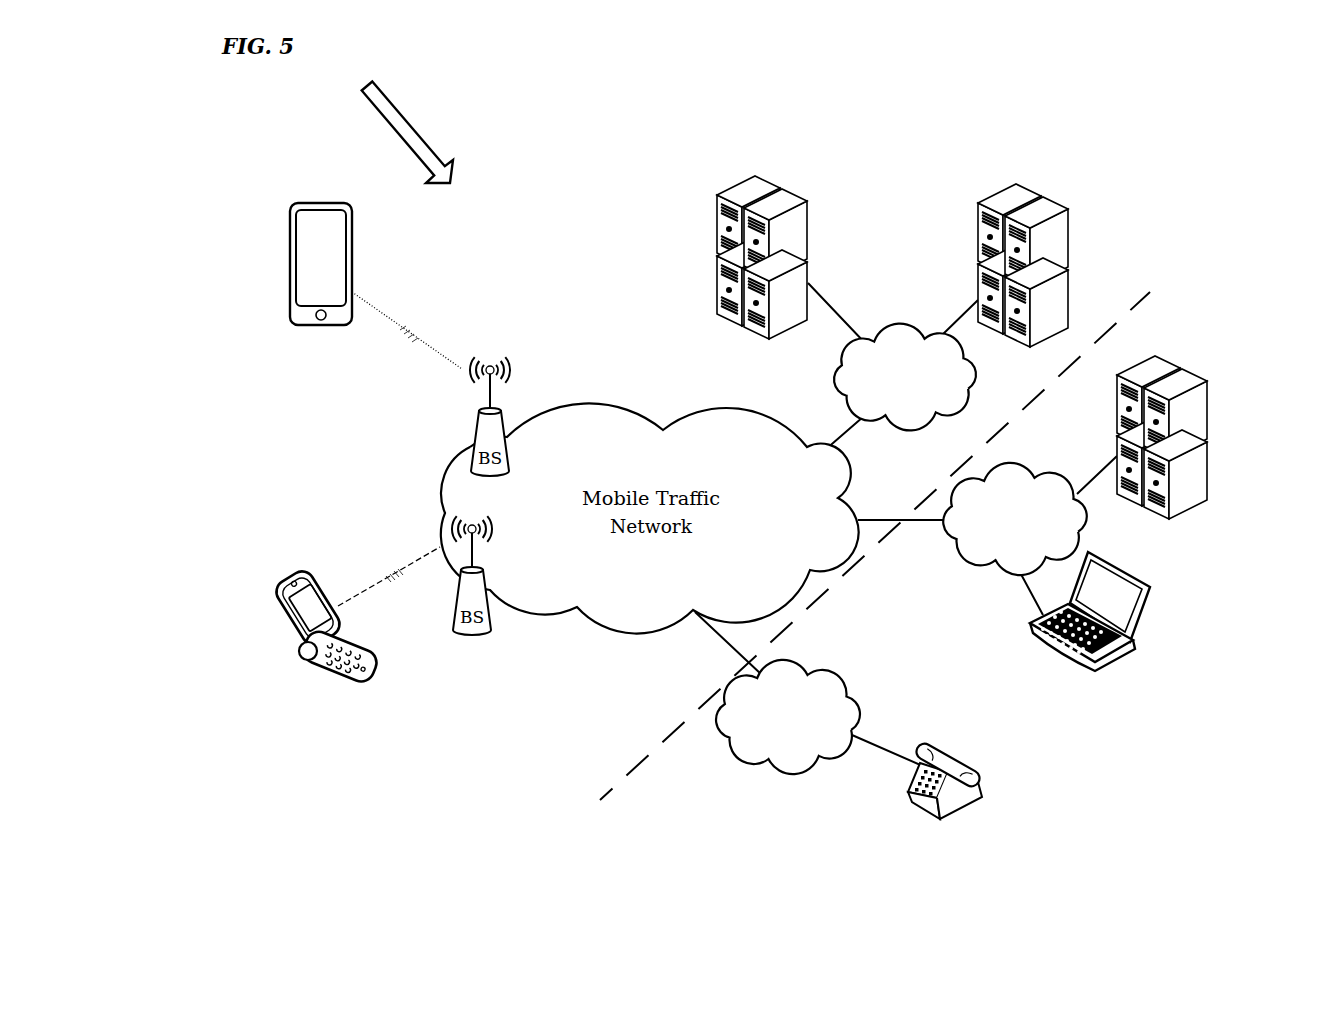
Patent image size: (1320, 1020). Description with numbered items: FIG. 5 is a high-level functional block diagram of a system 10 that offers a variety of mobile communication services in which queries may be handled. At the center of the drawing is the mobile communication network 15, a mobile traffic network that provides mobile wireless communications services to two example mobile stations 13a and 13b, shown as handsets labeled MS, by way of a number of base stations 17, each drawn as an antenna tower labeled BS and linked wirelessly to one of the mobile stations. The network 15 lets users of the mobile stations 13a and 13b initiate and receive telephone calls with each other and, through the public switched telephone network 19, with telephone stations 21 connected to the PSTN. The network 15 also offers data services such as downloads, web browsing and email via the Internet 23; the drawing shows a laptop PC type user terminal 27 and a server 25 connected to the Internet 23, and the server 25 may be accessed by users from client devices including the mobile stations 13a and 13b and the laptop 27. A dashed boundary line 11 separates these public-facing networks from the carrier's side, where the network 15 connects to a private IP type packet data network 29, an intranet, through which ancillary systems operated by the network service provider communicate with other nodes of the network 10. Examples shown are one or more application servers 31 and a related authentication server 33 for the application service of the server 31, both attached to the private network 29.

The system 10 is at (398, 126).
The network boundary 11 is at (875, 546).
The mobile station 13a is at (272, 604).
The mobile station 13b is at (290, 245).
The mobile communication network 15 is at (560, 413).
The base station 17 is at (470, 430).
The public switched telephone network 19 is at (853, 703).
The telephone station 21 is at (907, 800).
The Internet 23 is at (970, 555).
The server 25 is at (1117, 439).
The laptop PC type user terminal 27 is at (1063, 658).
The private IP type packet data network 29 is at (975, 389).
The application server 31 is at (812, 215).
The authentication server 33 is at (1068, 272).